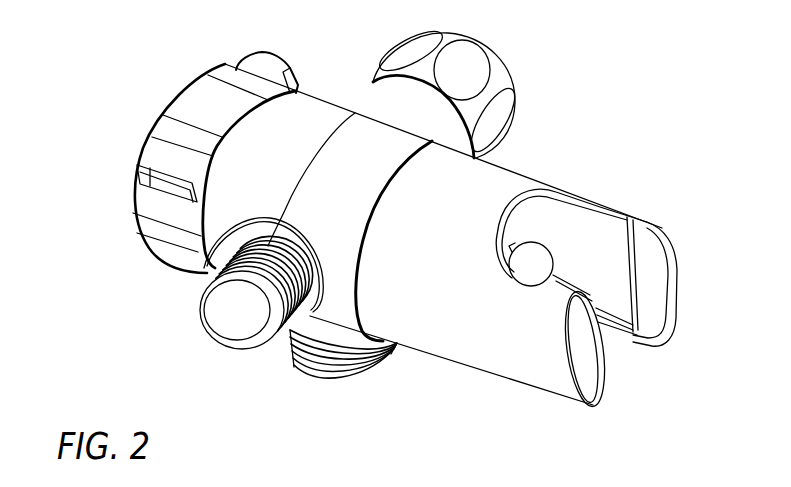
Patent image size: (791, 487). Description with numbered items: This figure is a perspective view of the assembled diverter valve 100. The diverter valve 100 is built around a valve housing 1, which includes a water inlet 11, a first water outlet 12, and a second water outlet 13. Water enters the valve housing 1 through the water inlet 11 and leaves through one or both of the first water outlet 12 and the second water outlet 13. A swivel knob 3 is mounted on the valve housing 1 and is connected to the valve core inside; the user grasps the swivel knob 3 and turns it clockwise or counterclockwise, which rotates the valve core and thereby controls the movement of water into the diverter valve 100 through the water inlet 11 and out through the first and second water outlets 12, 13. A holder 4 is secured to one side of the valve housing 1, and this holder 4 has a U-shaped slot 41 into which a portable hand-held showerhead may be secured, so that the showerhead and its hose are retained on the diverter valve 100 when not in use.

The diverter valve 100 is at (601, 109).
The valve housing 1 is at (257, 128).
The swivel knob 3 is at (150, 147).
The water inlet 11 is at (373, 100).
The first water outlet 12 is at (223, 307).
The second water outlet 13 is at (360, 380).
The holder 4 is at (478, 357).
The U-shaped slot 41 is at (600, 227).